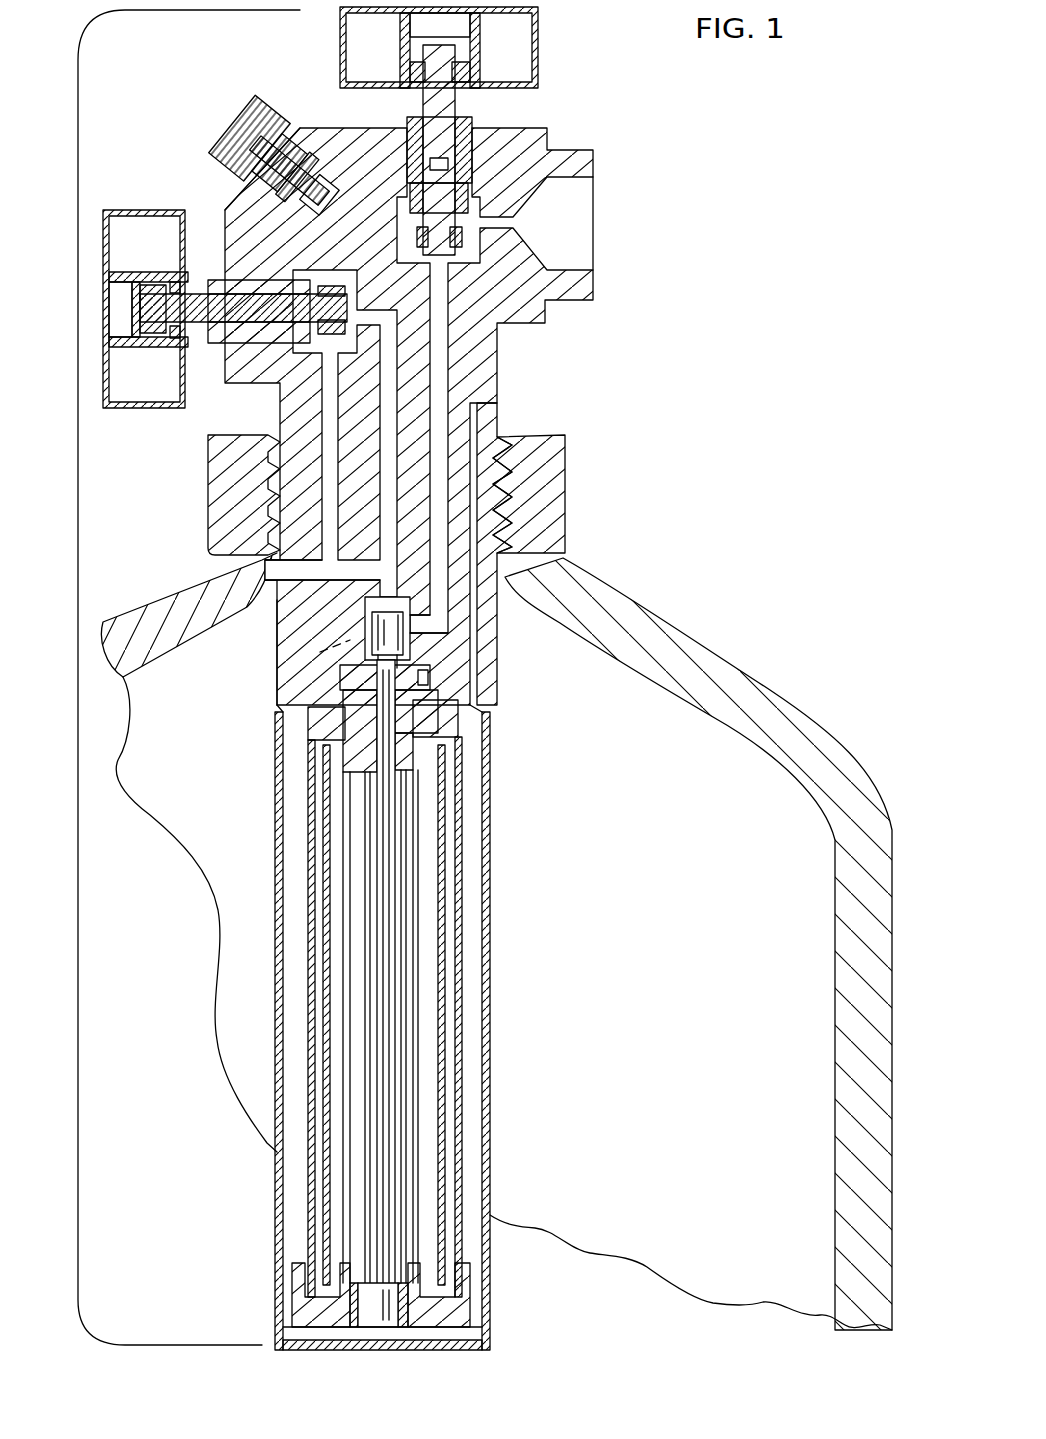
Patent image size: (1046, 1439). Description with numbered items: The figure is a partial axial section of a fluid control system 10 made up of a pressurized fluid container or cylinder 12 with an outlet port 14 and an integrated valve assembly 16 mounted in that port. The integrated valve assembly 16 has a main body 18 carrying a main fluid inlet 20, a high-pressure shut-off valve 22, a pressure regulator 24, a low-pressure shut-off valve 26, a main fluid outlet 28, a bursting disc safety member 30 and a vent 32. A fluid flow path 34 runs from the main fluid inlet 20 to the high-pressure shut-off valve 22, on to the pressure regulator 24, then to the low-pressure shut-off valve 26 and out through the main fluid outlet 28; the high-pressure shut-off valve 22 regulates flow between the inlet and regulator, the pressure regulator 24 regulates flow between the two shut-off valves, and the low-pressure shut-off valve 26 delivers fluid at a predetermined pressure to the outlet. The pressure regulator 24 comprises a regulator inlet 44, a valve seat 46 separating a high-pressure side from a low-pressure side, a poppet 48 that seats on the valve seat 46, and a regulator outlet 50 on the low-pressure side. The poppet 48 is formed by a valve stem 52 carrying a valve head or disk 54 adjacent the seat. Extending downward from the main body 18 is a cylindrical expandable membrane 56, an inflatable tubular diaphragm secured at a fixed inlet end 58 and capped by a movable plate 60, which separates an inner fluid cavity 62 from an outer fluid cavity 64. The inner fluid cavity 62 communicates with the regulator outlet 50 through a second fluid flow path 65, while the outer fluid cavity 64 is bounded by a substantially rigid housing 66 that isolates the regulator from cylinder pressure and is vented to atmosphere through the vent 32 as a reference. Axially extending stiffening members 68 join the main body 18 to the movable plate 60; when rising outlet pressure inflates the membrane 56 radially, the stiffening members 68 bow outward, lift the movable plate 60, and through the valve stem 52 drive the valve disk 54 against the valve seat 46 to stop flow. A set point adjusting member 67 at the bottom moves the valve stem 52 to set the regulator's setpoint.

The fluid control system 10 is at (724, 229).
The pressurized fluid container or cylinder 12 is at (765, 688).
The outlet port 14 is at (270, 463).
The integrated valve assembly 16 is at (63, 846).
The main body 18 is at (497, 380).
The main fluid inlet 20 is at (293, 568).
The high-pressure shut-off valve 22 is at (253, 270).
The pressure regulator 24 is at (490, 1040).
The low-pressure shut-off valve 26 is at (472, 162).
The main fluid outlet 28 is at (510, 227).
The bursting disc safety member 30 is at (313, 177).
The vent 32 is at (493, 408).
The fluid flow path 34 is at (388, 378).
The regulator inlet 44 is at (347, 590).
The valve seat 46 is at (407, 607).
The poppet 48 is at (395, 972).
The regulator outlet 50 is at (422, 625).
The valve stem 52 is at (377, 1083).
The valve head or disk 54 is at (310, 652).
The cylindrical expandable membrane 56 is at (337, 900).
The fixed inlet end 58 is at (323, 728).
The movable plate 60 is at (308, 1312).
The inner fluid cavity 62 is at (360, 1152).
The outer fluid cavity 64 is at (293, 1336).
The second fluid flow path 65 is at (405, 682).
The substantially rigid housing 66 is at (278, 1250).
The set point adjusting member 67 is at (398, 1315).
The stiffening members 68 is at (310, 1186).